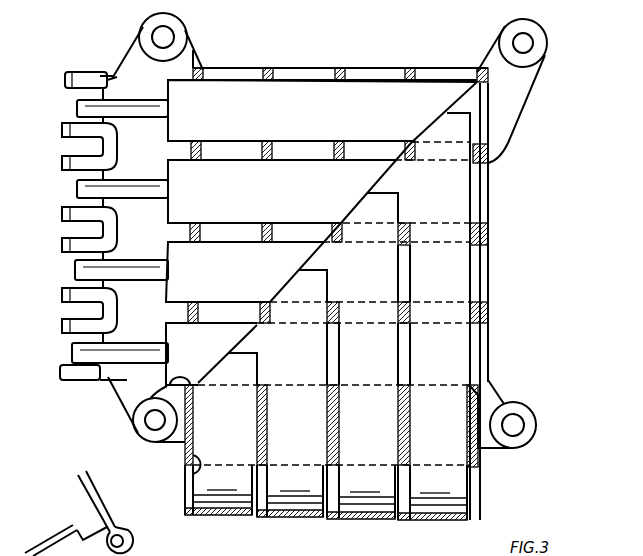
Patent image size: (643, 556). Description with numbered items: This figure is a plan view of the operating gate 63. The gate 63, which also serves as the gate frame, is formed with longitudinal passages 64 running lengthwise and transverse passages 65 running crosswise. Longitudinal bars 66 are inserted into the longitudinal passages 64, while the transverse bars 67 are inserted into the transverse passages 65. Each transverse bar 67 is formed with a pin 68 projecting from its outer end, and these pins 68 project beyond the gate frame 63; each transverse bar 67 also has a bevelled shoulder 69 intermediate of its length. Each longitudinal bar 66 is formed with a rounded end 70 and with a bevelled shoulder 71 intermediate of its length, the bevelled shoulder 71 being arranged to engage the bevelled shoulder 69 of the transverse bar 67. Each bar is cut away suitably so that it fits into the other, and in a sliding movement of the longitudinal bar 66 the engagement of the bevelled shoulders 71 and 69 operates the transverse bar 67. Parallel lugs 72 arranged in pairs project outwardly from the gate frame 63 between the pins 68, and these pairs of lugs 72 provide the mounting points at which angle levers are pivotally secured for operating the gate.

The gate 63 is at (275, 70).
The longitudinal passages 64 is at (268, 433).
The transverse passages 65 is at (201, 143).
The longitudinal bars 66 is at (192, 491).
The transverse bars 67 is at (377, 84).
The pin 68 is at (77, 107).
The bevelled shoulder 69 is at (211, 377).
The rounded end 70 is at (225, 516).
The bevelled shoulder 71 is at (220, 361).
The parallel lugs 72 is at (65, 80).